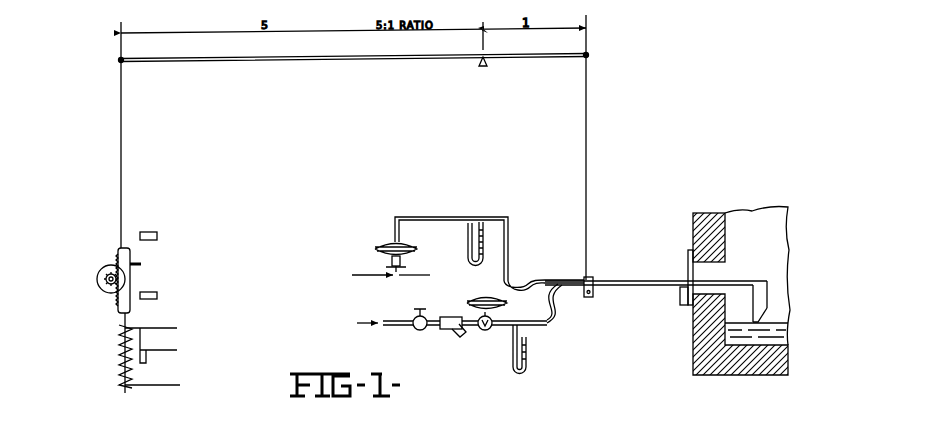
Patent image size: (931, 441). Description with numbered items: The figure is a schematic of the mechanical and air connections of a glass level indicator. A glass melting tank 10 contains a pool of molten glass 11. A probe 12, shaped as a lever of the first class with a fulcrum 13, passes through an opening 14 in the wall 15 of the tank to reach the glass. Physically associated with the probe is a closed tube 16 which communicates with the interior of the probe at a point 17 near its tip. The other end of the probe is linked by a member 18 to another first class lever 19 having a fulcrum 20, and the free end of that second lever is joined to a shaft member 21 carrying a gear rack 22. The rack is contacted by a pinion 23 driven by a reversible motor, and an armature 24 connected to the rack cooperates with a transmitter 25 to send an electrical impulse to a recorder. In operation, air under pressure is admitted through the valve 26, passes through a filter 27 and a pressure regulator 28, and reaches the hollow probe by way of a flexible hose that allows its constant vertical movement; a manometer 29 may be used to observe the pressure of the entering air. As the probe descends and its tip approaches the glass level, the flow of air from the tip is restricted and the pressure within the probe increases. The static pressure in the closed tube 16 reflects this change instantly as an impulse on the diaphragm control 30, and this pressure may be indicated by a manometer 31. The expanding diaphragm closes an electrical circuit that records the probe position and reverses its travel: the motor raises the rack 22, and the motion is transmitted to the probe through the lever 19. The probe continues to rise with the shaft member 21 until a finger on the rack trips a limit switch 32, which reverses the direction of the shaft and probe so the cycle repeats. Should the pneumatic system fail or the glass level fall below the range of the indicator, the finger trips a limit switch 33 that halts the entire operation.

The glass melting tank 10 is at (693, 358).
The molten glass 11 is at (737, 340).
The probe 12 is at (600, 290).
The fulcrum 13 is at (681, 294).
The opening 14 is at (718, 276).
The wall 15 is at (704, 212).
The closed tube 16 is at (783, 279).
The point 17 is at (762, 303).
The member 18 is at (588, 105).
The first class lever 19 is at (527, 62).
The fulcrum 20 is at (473, 59).
The shaft member 21 is at (121, 138).
The gear rack 22 is at (117, 250).
The pinion 23 is at (107, 289).
The armature 24 is at (126, 318).
The transmitter 25 is at (115, 353).
The valve 26 is at (421, 331).
The filter 27 is at (451, 334).
The pressure regulator 28 is at (493, 331).
The manometer 29 is at (529, 357).
The diaphragm control 30 is at (385, 244).
The manometer 31 is at (141, 264).
The limit switch 32 is at (157, 236).
The limit switch 33 is at (158, 296).